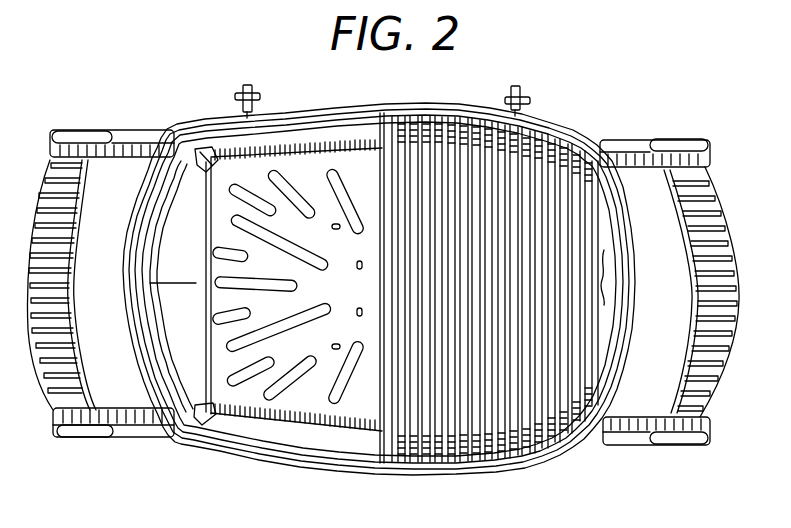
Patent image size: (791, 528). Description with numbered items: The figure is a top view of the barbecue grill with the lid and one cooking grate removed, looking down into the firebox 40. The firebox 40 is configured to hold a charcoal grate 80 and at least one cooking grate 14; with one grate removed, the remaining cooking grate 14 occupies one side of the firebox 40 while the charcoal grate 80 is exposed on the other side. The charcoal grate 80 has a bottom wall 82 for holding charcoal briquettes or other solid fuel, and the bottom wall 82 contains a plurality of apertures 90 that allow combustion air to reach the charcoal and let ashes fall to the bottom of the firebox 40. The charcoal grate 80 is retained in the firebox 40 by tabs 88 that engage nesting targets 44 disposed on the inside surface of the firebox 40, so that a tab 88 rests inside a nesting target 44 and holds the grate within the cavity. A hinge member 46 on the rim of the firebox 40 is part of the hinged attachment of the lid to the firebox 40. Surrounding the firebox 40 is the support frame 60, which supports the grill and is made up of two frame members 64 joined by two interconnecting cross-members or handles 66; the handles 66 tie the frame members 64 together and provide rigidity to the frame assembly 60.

The cooking grate 14 is at (511, 447).
The firebox 40 is at (163, 121).
The nesting target 44 is at (214, 165).
The hinge member 46 is at (530, 98).
The support frame 60 is at (684, 453).
The frame member 64 is at (122, 420).
The cross-member (handle) 66 is at (712, 205).
The charcoal grate 80 is at (262, 440).
The bottom wall 82 is at (250, 236).
The tab 88 is at (202, 416).
The aperture 90 is at (285, 183).